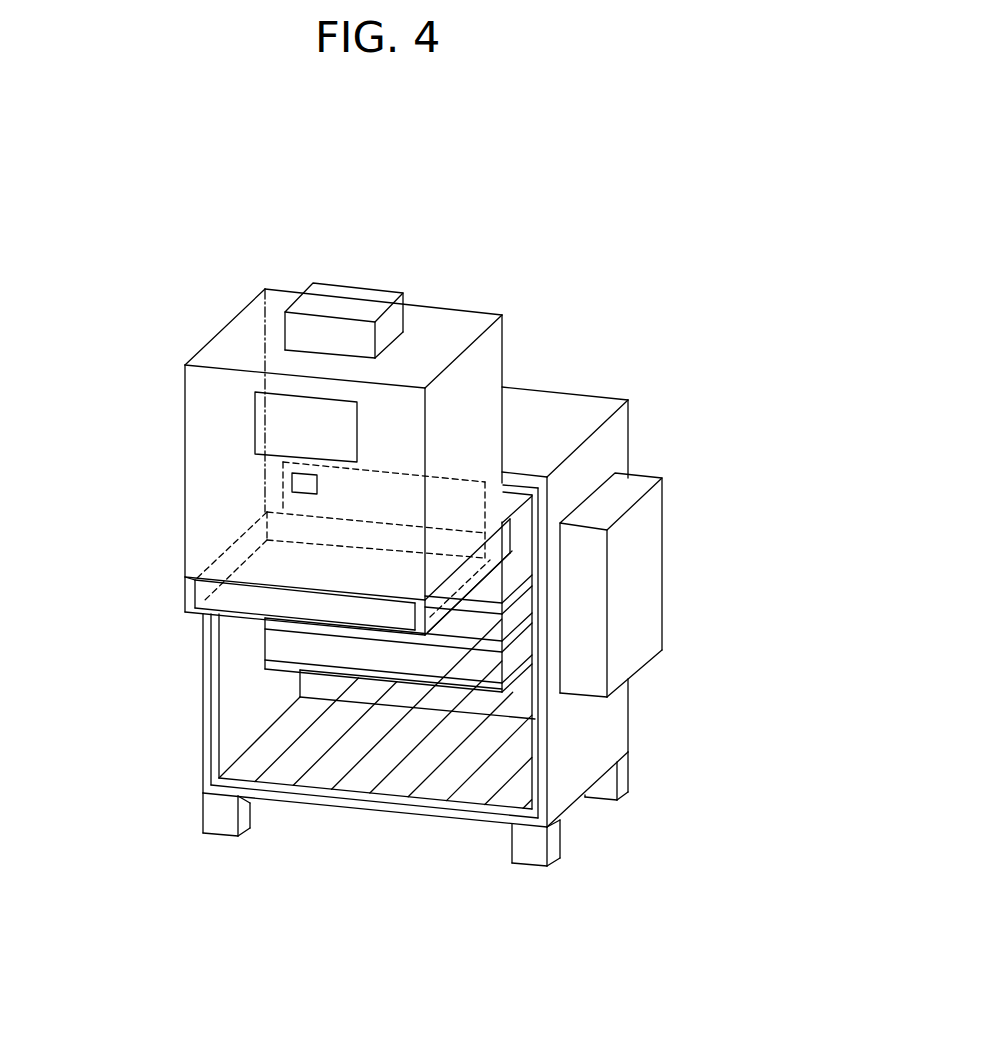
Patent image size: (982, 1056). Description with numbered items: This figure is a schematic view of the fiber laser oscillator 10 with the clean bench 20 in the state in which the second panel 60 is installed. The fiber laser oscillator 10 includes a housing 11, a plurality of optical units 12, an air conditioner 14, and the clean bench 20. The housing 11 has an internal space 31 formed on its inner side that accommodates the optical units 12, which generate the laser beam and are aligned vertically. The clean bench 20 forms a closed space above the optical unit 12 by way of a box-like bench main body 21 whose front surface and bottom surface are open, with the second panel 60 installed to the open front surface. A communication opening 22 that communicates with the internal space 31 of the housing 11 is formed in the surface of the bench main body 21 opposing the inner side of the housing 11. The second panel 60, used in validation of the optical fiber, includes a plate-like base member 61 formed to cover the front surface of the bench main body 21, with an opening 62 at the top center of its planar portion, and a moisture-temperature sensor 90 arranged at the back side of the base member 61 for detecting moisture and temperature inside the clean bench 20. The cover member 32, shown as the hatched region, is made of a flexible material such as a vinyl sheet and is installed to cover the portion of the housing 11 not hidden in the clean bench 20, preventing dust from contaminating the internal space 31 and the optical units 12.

The fiber laser oscillator 10 is at (645, 181).
The housing 11 is at (583, 403).
The optical unit 12 is at (206, 611).
The air conditioner 14 is at (650, 586).
The clean bench 20 is at (440, 322).
The bench main body 21 is at (233, 352).
The communication opening 22 is at (448, 470).
The internal space 31 is at (240, 697).
The cover member 32 is at (232, 752).
The second panel 60 is at (195, 380).
The base member 61 is at (207, 461).
The opening 62 is at (255, 432).
The moisture-temperature sensor 90 is at (292, 483).